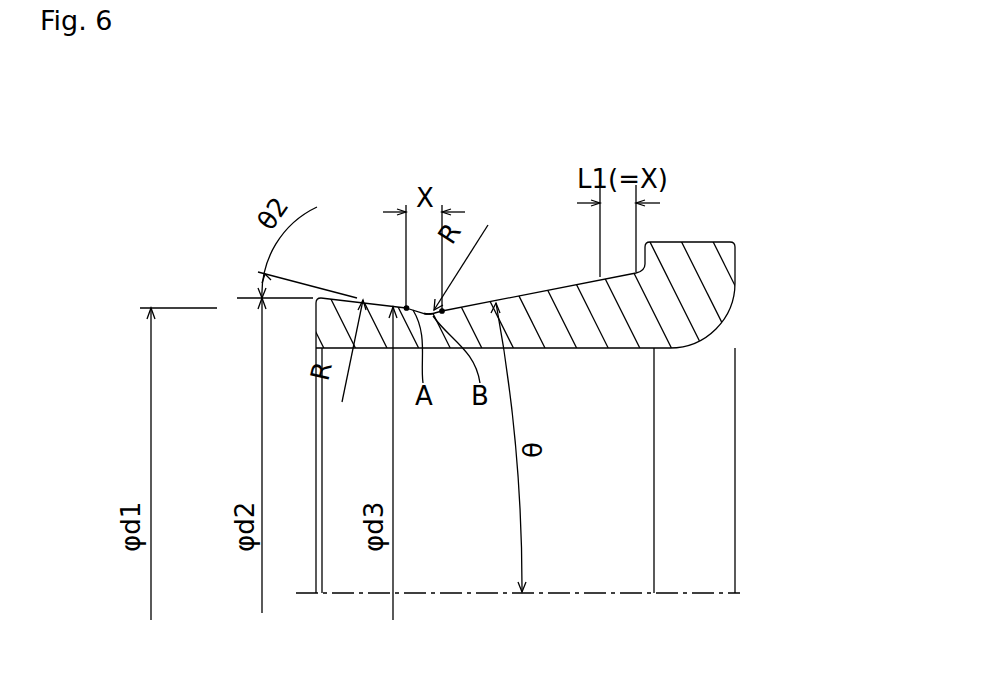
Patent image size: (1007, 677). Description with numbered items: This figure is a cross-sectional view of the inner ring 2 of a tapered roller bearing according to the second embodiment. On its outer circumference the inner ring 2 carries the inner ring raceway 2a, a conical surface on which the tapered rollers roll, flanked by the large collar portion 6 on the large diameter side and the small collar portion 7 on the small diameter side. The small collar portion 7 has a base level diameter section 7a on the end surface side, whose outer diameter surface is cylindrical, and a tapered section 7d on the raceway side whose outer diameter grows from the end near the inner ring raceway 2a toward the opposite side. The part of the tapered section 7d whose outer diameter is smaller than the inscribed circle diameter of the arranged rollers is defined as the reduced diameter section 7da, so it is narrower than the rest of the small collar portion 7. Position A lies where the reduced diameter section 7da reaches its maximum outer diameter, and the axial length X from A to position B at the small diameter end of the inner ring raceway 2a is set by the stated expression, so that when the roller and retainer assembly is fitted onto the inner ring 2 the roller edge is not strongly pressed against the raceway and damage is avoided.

The inner ring 2 is at (672, 338).
The inner ring raceway 2a is at (543, 293).
The large collar portion 6 is at (698, 250).
The small collar portion 7 is at (383, 122).
The base level diameter section 7a is at (340, 307).
The tapered section 7d is at (385, 305).
The reduced diameter section 7da is at (428, 317).